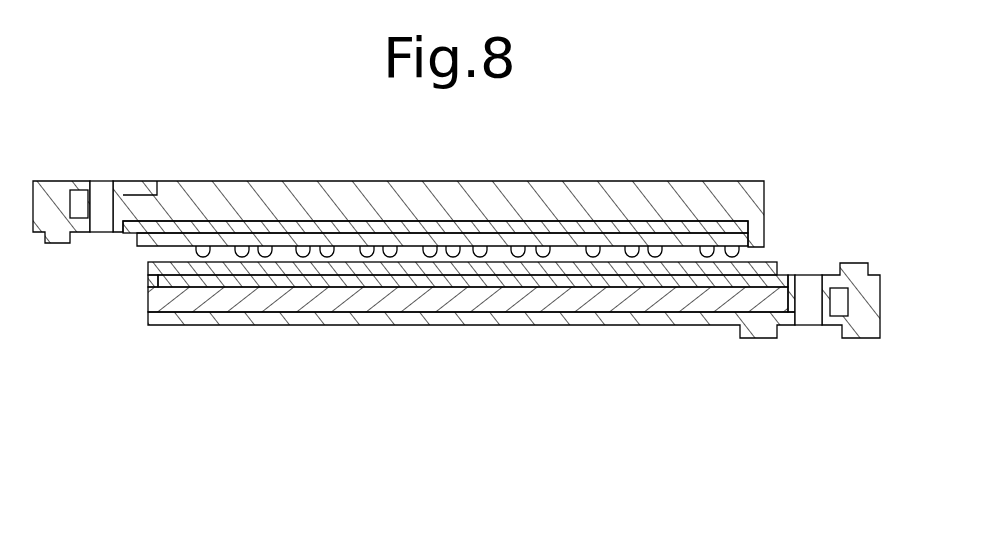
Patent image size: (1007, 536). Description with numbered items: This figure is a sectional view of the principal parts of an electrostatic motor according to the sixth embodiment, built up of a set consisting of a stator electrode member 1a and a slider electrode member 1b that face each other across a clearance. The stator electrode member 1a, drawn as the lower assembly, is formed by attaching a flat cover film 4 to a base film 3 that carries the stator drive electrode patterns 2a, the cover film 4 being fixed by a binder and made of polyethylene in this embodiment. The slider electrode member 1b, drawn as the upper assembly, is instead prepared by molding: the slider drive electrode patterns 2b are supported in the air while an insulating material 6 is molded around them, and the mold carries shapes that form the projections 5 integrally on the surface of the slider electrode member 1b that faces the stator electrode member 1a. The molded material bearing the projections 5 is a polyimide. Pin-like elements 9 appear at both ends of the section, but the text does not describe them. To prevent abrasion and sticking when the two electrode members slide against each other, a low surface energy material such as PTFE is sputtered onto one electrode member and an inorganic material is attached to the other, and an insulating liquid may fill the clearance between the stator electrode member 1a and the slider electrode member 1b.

The stator electrode member 1a is at (514, 324).
The slider electrode member 1b is at (398, 249).
The stator drive electrode patterns 2a is at (552, 282).
The slider drive electrode patterns 2b is at (501, 232).
The base film 3 is at (448, 300).
The cover film 4 is at (300, 318).
The projections 5 is at (265, 252).
The insulating material 6 is at (723, 197).
The positioning pin 9 is at (103, 190).